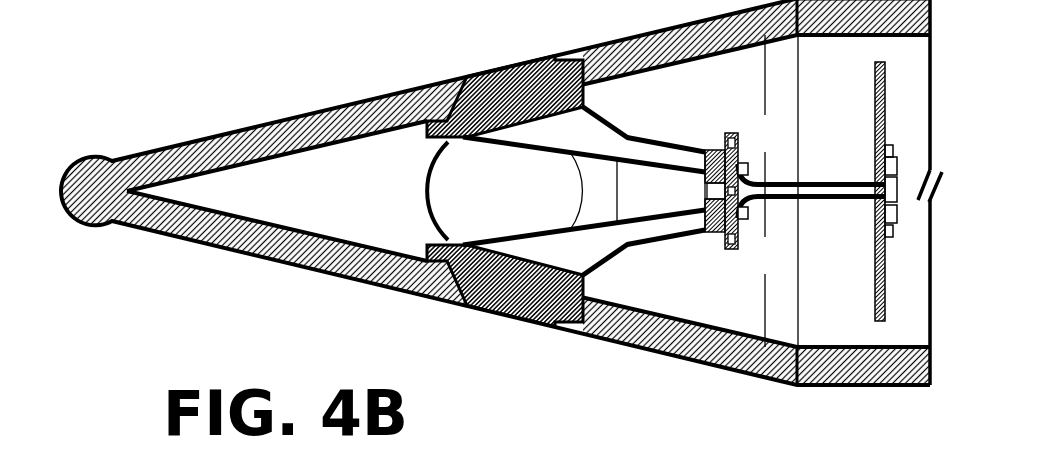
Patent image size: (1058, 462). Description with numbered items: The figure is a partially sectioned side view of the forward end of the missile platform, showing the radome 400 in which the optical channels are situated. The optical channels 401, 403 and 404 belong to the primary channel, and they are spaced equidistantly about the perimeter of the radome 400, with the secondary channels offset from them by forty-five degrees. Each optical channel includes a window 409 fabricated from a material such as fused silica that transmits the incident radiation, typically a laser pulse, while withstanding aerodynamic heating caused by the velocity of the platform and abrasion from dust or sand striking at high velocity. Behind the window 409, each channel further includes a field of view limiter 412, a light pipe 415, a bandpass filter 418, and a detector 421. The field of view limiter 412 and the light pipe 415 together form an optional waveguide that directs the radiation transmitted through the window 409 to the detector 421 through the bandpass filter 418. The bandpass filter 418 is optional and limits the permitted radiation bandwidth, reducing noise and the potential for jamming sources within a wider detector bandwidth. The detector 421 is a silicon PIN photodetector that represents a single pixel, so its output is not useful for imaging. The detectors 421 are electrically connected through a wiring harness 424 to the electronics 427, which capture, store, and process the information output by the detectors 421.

The radome 400 is at (501, 192).
The optical channel 401 is at (460, 52).
The optical channel 403 is at (465, 333).
The optical channel 404 is at (414, 162).
The window 409 is at (523, 63).
The field of view limiter 412 is at (587, 110).
The light pipe 415 is at (646, 141).
The bandpass filter 418 is at (707, 150).
The detector 421 is at (738, 149).
The wiring harness 424 is at (815, 183).
The electronics 427 is at (912, 131).